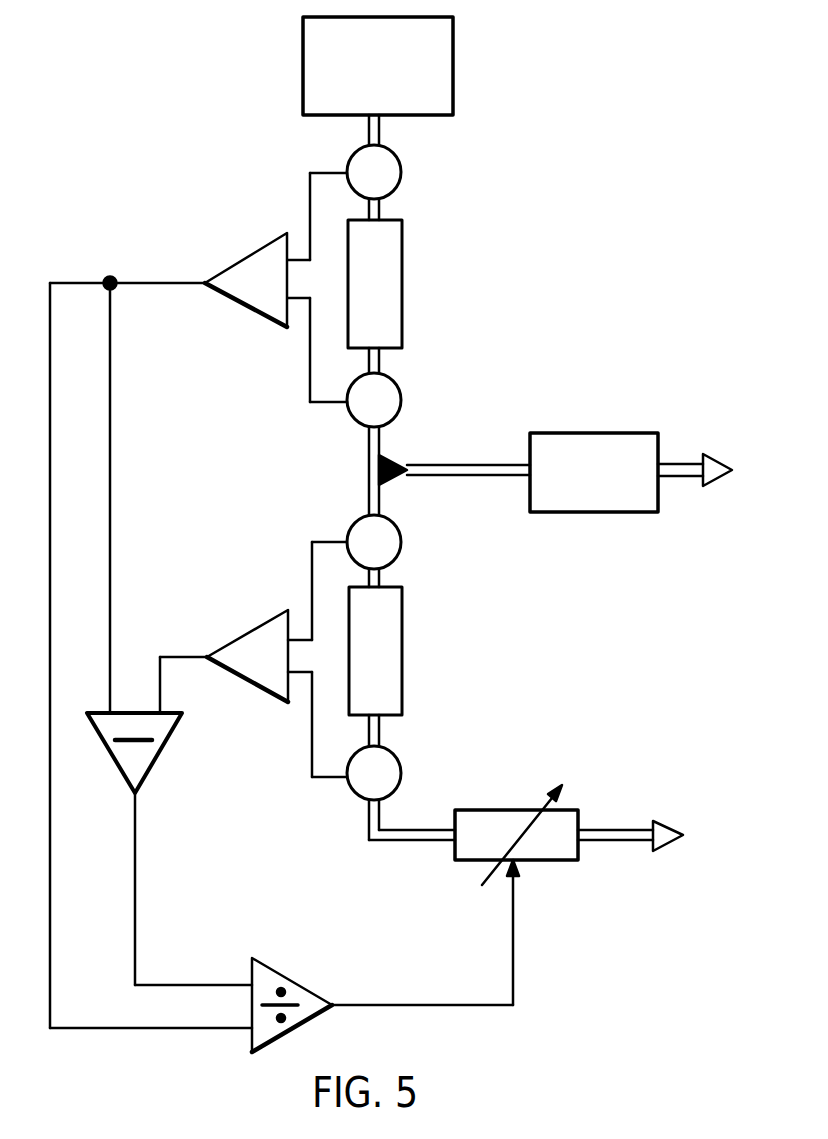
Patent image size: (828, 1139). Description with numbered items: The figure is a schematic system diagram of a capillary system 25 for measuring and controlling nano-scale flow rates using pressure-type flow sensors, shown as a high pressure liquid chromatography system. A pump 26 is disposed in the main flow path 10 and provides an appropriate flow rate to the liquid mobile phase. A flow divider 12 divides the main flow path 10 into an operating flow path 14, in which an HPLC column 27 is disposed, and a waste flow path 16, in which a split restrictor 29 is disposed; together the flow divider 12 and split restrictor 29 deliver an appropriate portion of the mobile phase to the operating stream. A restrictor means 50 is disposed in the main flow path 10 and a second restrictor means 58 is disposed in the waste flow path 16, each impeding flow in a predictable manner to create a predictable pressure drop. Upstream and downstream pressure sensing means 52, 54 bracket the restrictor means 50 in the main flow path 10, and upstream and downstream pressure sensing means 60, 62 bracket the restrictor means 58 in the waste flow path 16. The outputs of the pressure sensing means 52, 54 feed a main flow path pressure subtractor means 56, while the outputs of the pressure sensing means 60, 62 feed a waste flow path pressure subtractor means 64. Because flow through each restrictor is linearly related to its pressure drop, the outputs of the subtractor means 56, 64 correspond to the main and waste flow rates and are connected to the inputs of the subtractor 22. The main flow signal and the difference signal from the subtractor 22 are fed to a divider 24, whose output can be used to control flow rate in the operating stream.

The capillary system 25 is at (163, 196).
The pump 26 is at (457, 71).
The main flow path 10 is at (368, 137).
The upstream pressure sensing means 52 is at (400, 163).
The restrictor means 50 is at (402, 298).
The downstream pressure sensing means 54 is at (402, 392).
The main flow path pressure subtractor means 56 is at (251, 313).
The flow divider 12 is at (388, 457).
The operating flow path 14 is at (455, 463).
The HPLC column 27 is at (640, 430).
The upstream pressure sensing means 60 is at (400, 532).
The restrictor means 58 is at (403, 663).
The downstream pressure sensing means 62 is at (402, 762).
The waste flow path pressure subtractor means 64 is at (250, 630).
The subtractor 22 is at (168, 741).
The divider 24 is at (298, 982).
The waste flow path 16 is at (426, 843).
The split restrictor 29 is at (553, 862).